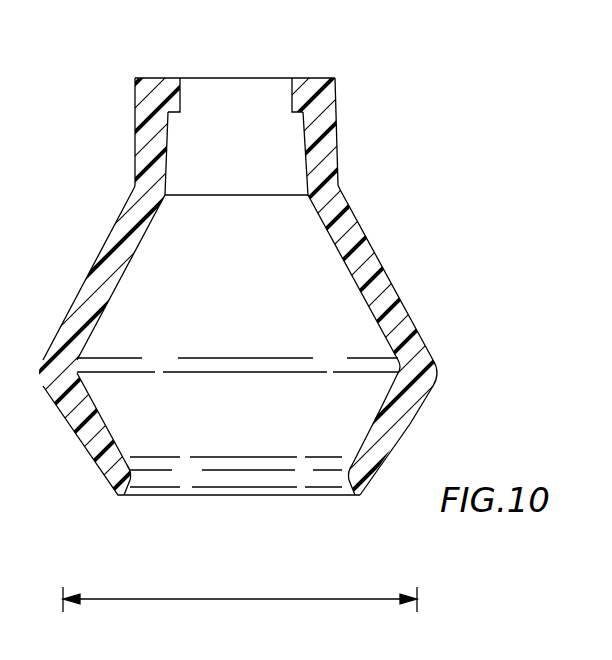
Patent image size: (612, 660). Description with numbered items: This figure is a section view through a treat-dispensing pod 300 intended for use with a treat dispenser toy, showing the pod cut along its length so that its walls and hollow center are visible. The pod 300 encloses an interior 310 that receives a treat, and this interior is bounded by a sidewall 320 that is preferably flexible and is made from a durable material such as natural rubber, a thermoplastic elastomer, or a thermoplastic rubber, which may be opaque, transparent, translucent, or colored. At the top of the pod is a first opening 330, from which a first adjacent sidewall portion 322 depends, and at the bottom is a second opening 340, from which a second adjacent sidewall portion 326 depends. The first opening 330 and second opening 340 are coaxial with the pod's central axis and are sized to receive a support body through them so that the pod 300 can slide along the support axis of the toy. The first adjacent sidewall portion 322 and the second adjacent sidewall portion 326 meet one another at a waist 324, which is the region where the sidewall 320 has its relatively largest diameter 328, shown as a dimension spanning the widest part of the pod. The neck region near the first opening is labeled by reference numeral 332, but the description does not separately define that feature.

The treat-dispensing pod 300 is at (485, 126).
The interior 310 is at (250, 273).
The sidewall 320 is at (377, 242).
The first adjacent sidewall portion 322 is at (100, 245).
The waist 324 is at (433, 372).
The second adjacent sidewall portion 326 is at (408, 423).
The relatively largest diameter 328 is at (242, 599).
The first opening 330 is at (237, 85).
The neck wall 332 is at (332, 118).
The second opening 340 is at (128, 499).